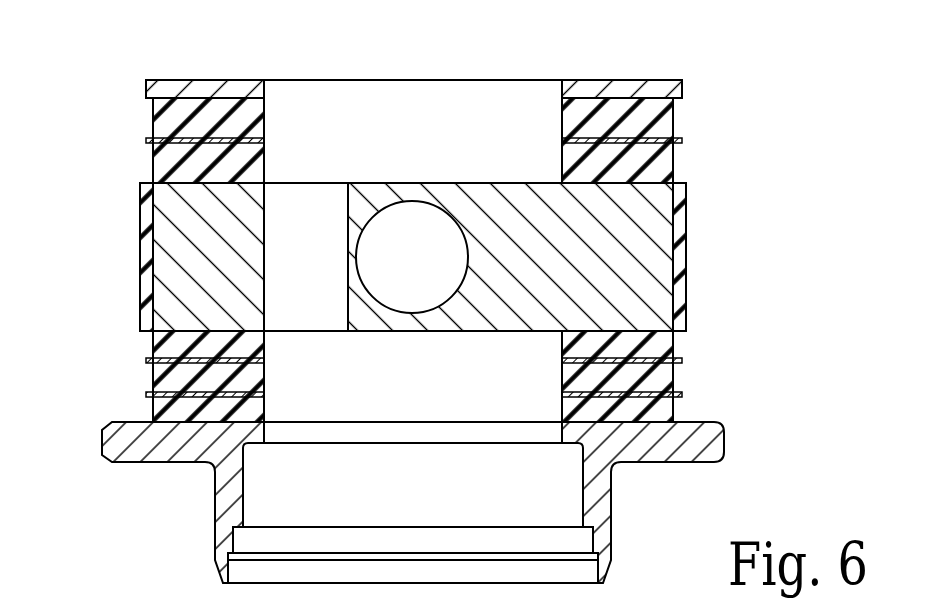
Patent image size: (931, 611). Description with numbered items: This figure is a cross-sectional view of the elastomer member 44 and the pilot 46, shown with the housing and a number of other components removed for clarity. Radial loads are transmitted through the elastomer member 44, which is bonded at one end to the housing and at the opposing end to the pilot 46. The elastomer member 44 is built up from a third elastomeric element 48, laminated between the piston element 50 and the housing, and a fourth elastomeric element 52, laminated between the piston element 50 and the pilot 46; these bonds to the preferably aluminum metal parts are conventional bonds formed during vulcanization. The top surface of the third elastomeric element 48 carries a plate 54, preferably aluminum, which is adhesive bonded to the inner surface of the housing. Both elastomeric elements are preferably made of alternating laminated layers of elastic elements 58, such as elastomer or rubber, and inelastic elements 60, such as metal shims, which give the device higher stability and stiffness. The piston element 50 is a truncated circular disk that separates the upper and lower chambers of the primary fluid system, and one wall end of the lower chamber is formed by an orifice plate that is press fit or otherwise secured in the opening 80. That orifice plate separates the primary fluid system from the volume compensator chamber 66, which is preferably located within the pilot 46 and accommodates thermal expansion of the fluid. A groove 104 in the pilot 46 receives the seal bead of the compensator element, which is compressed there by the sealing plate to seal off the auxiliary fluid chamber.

The elastomer member 44 is at (126, 68).
The pilot 46 is at (104, 438).
The third elastomeric element 48 is at (132, 132).
The piston element 50 is at (170, 259).
The fourth elastomeric element 52 is at (128, 365).
The plate 54 is at (672, 93).
The elastic elements 58 is at (648, 117).
The inelastic elements 60 is at (683, 142).
The volume compensator chamber 66 is at (419, 502).
The opening 80 is at (560, 433).
The groove 104 is at (610, 560).